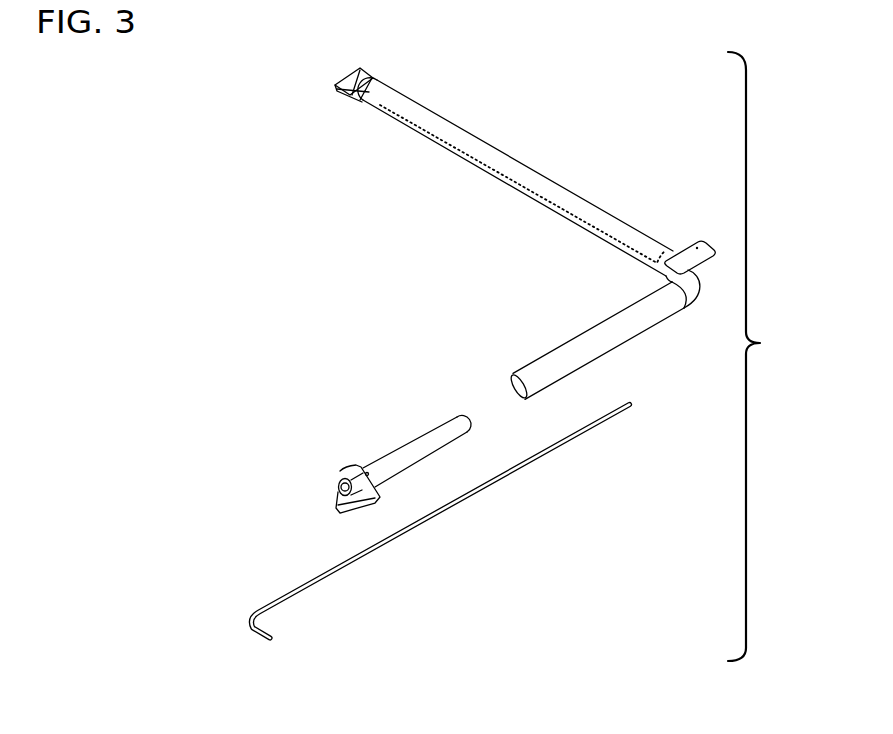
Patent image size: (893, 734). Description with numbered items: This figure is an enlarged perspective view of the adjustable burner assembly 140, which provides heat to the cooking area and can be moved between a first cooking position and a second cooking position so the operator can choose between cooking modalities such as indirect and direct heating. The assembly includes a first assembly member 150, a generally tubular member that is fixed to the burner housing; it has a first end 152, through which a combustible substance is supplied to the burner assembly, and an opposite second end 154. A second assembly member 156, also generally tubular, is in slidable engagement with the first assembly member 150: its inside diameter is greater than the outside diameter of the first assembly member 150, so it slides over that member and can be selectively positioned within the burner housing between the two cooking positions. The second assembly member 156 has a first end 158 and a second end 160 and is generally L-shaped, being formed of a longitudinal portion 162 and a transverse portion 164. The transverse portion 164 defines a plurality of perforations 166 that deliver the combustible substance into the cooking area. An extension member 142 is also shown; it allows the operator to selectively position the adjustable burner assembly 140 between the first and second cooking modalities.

The adjustable burner assembly 140 is at (763, 356).
The extension member 142 is at (289, 596).
The first assembly member 150 is at (388, 462).
The first end 152 is at (333, 515).
The second end 154 is at (457, 415).
The second assembly member 156 is at (463, 131).
The first end 158 is at (508, 381).
The second end 160 is at (350, 77).
The longitudinal portion 162 is at (628, 340).
The transverse portion 164 is at (537, 190).
The perforations 166 is at (400, 122).